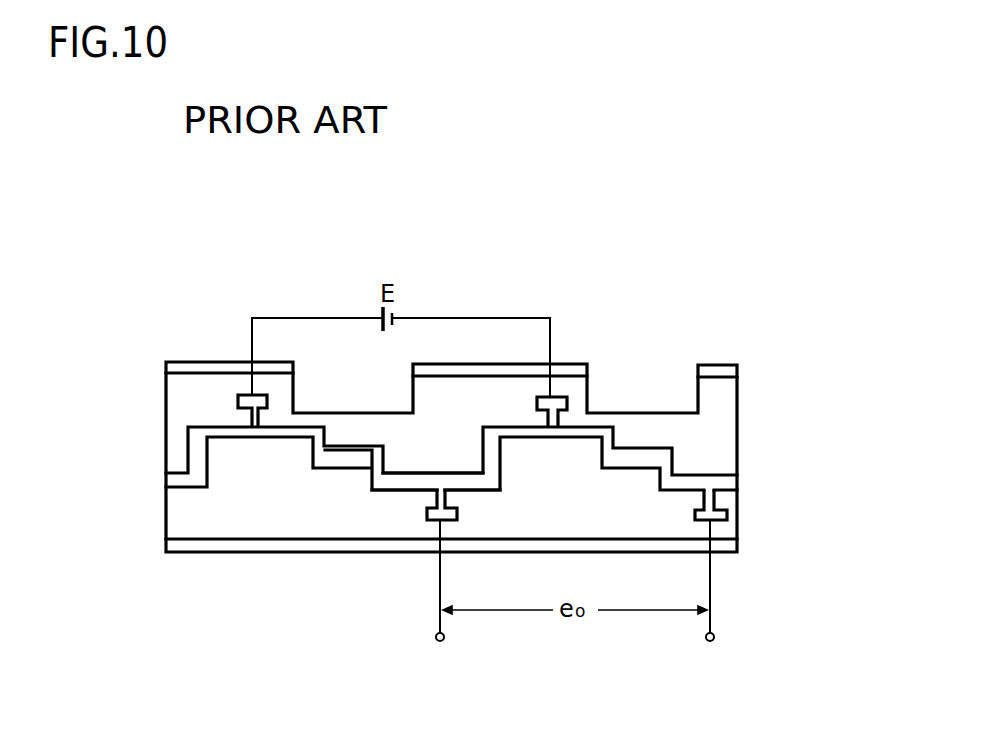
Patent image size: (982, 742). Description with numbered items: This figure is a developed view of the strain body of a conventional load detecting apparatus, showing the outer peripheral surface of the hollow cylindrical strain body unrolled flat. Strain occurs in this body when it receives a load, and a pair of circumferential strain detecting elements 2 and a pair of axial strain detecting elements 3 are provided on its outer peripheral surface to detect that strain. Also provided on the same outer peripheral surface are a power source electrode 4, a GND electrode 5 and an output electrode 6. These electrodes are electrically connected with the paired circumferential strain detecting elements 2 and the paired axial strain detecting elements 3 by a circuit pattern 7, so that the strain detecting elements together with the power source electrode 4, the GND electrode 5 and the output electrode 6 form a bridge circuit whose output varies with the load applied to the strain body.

The circumferential strain detecting elements 2 is at (636, 458).
The axial strain detecting elements 3 is at (198, 455).
The power source electrode 4 is at (257, 395).
The GND electrode 5 is at (556, 402).
The output electrode 6 is at (435, 512).
The circuit pattern 7 is at (423, 478).